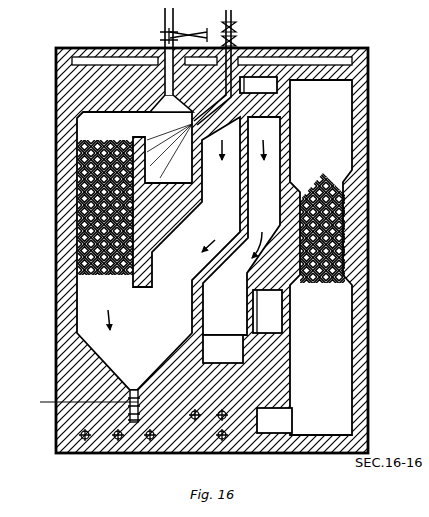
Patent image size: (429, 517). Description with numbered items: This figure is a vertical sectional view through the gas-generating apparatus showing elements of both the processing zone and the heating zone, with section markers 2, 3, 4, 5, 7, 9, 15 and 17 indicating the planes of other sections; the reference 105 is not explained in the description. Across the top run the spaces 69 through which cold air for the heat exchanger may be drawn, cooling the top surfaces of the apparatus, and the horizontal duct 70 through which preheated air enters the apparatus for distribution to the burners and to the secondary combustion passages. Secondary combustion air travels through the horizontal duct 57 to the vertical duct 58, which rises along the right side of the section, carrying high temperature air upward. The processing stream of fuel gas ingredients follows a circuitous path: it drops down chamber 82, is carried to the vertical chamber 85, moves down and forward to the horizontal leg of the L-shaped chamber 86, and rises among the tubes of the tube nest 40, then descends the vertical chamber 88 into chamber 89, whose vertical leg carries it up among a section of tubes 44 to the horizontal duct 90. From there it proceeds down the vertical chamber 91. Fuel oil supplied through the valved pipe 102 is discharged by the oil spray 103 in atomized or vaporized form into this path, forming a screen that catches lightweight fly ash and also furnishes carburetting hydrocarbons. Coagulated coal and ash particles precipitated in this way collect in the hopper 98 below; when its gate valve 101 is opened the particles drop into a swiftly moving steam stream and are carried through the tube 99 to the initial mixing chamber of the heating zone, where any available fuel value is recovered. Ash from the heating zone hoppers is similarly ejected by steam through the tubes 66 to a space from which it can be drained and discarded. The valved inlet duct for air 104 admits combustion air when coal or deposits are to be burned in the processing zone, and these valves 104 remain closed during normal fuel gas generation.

The tube nest 40 is at (328, 174).
The tubes 44 is at (110, 137).
The horizontal duct 57 is at (274, 420).
The vertical duct 58 is at (321, 257).
The tube 66 is at (88, 424).
The space 69 is at (366, 49).
The horizontal duct 70 is at (258, 85).
The chamber 82 is at (267, 311).
The vertical chamber 85 is at (241, 226).
The L-shaped chamber 86 is at (223, 349).
The vertical chamber 88 is at (215, 196).
The chamber 89 is at (158, 251).
The horizontal duct 90 is at (137, 113).
The vertical chamber 91 is at (148, 181).
The hopper 98 is at (132, 398).
The tube 99 is at (140, 416).
The gate valve 101 is at (139, 402).
The valved pipe 102 is at (233, 22).
The oil spray 103 is at (220, 108).
The valved inlet duct for air 104 is at (163, 78).
The section marker 105 is at (418, 64).
The section line 2- 2 is at (38, 84).
The section line 3- 3 is at (38, 133).
The tube nest 4 is at (38, 338).
The section line 5- 5 is at (38, 380).
The section line 7- 7 is at (313, 30).
The section line 9- 9 is at (108, 32).
The section line 15- 15 is at (249, 30).
The section line 17- 17 is at (162, 7).